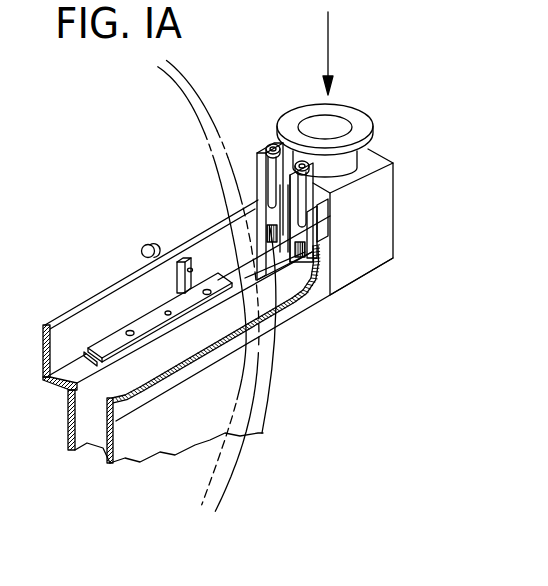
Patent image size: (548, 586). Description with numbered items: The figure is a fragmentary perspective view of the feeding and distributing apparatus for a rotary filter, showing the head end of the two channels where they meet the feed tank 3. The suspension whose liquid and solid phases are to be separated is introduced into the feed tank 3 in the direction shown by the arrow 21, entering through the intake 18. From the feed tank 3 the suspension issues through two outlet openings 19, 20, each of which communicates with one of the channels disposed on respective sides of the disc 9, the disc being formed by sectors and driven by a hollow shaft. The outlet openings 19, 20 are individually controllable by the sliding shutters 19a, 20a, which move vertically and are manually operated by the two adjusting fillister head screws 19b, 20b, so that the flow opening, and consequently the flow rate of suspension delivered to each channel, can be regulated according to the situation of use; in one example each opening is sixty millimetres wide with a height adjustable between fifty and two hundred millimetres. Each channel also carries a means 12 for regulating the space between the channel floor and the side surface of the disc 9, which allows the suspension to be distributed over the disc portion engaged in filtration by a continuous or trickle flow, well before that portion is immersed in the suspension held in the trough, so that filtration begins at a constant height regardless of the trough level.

The feed tank 3 is at (377, 188).
The disc 9 is at (191, 102).
The means for regulating a space 12 is at (167, 311).
The intake 18 is at (331, 128).
The outlet opening 19 is at (272, 262).
The sliding shutter 19a is at (254, 245).
The adjusting fillister head screw 19b is at (270, 146).
The outlet opening 20 is at (302, 265).
The sliding shutter 20a is at (318, 243).
The adjusting fillister head screw 20b is at (318, 188).
The arrow 21 is at (328, 52).